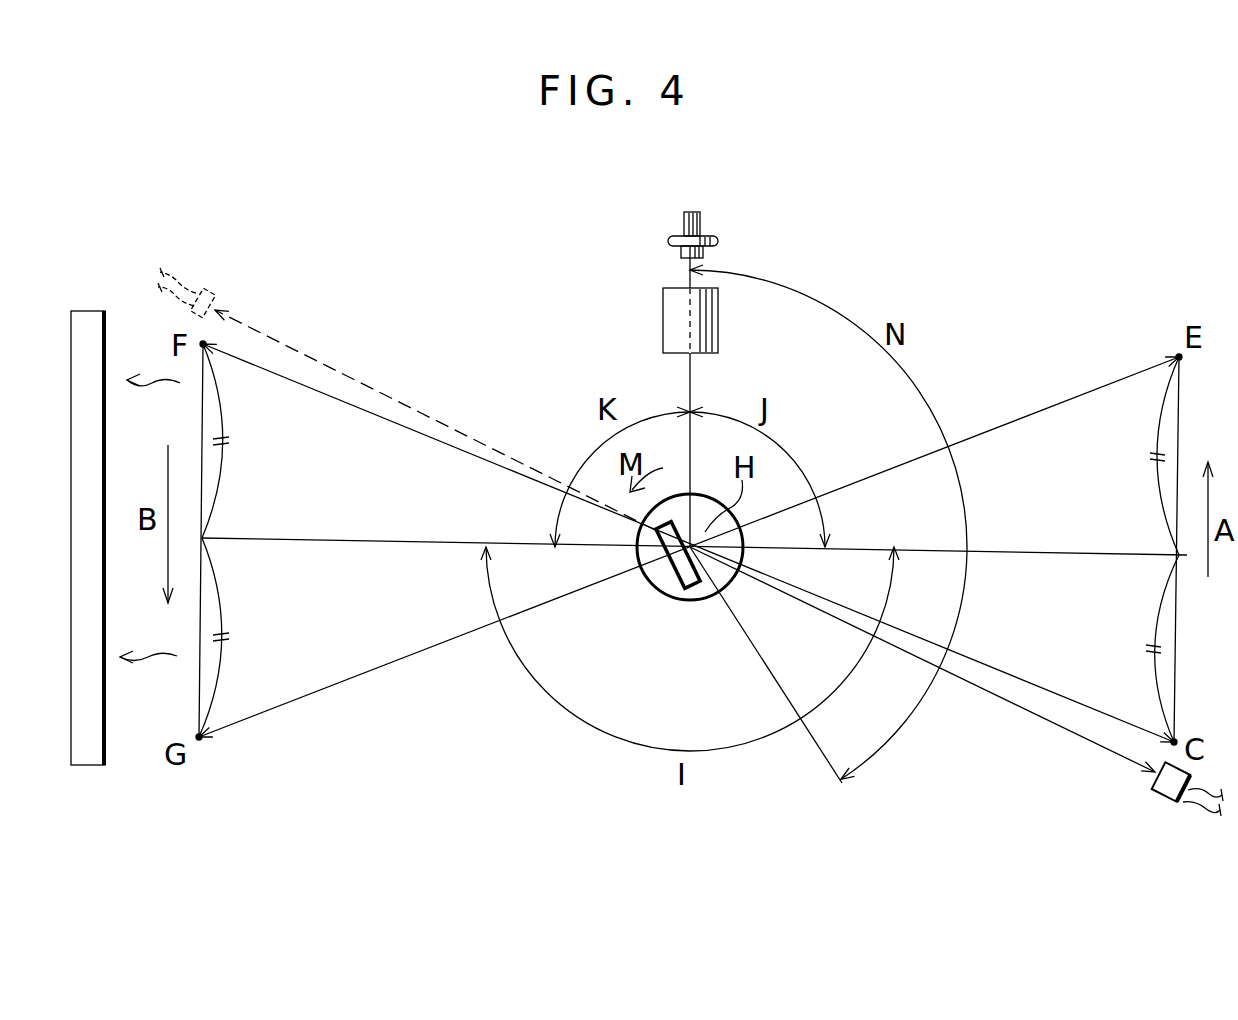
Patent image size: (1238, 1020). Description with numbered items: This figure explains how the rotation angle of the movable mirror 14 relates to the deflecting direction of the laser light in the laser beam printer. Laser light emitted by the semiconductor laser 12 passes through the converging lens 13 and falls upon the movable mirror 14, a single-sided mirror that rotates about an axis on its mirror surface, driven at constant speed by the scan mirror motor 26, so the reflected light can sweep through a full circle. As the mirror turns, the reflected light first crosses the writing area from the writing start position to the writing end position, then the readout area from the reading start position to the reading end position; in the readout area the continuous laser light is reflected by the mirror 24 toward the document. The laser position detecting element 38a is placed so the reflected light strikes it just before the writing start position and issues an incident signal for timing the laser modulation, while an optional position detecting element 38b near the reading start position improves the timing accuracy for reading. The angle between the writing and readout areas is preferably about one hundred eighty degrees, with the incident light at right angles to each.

The semiconductor laser 12 is at (718, 241).
The converging lens 13 is at (718, 331).
The movable mirror 14 is at (700, 587).
The mirror 24 is at (100, 316).
The scan mirror motor 26 is at (668, 580).
The laser position detecting element 38a is at (1163, 795).
The position detecting element 38b is at (217, 290).